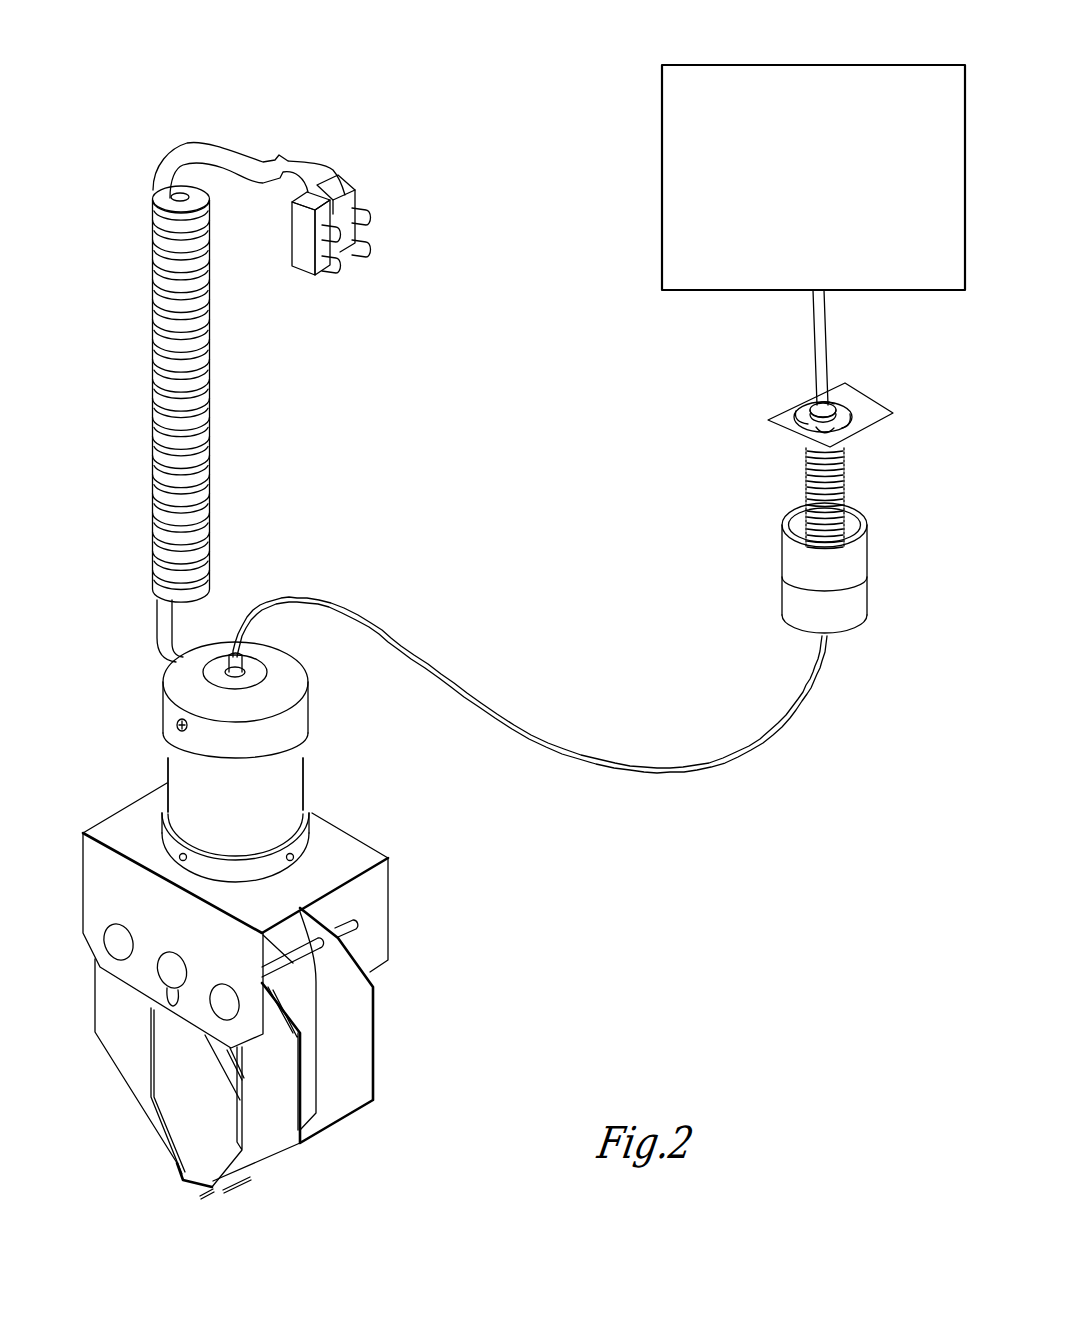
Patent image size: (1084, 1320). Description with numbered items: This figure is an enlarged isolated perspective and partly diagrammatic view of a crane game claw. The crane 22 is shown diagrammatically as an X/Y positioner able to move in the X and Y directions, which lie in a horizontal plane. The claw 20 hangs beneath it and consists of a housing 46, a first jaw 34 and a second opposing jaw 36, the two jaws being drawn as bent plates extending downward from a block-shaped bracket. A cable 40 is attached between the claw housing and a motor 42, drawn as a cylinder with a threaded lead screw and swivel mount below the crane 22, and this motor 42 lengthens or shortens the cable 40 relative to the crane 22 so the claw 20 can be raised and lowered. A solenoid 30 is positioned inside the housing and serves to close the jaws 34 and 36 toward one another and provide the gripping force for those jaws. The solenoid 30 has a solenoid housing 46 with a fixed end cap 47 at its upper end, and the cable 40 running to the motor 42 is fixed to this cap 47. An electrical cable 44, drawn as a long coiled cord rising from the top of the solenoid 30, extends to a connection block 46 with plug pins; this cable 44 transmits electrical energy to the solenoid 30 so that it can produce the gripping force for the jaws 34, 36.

The claw 20 is at (465, 882).
The crane 22 is at (666, 203).
The solenoid 30 is at (305, 756).
The first jaw 34 is at (155, 1133).
The second opposing jaw 36 is at (373, 1052).
The cable 40 is at (574, 747).
The motor 42 is at (784, 542).
The electrical cable 44 is at (212, 380).
The connection block / solenoid housing 46 is at (345, 188).
The end cap 47 is at (308, 697).